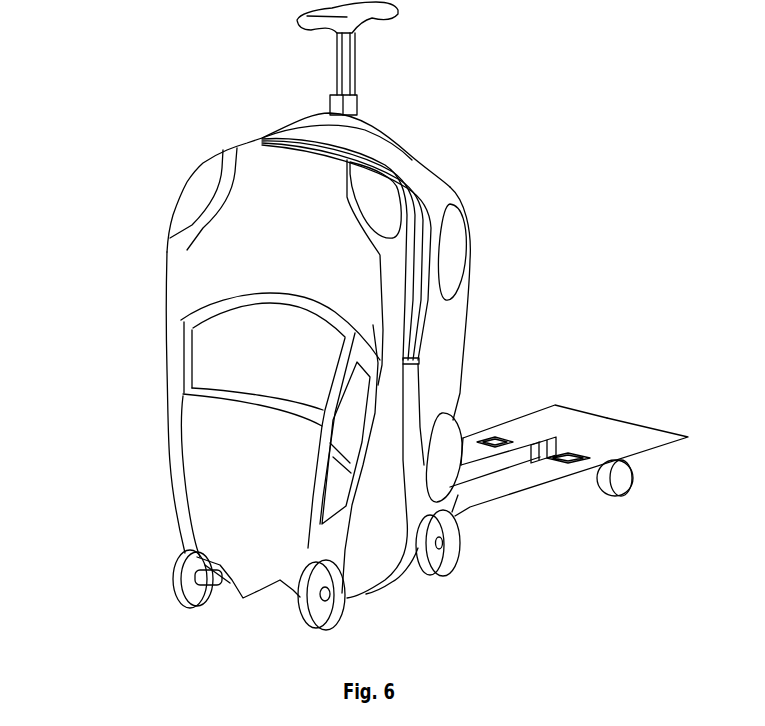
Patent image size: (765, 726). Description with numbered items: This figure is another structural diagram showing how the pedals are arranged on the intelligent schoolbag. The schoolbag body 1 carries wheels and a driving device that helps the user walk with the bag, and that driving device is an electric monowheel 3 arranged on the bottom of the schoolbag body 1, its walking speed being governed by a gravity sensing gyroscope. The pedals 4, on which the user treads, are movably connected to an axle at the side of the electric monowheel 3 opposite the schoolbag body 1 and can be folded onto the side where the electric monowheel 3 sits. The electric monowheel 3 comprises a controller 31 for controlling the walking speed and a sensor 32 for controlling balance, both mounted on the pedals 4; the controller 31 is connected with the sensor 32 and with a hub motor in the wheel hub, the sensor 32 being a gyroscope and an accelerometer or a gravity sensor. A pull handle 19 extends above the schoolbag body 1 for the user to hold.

The pull rod handle 19 is at (297, 22).
The schoolbag body 1 is at (442, 192).
The electric monowheel 3 is at (617, 477).
The pedals 4 is at (607, 441).
The controller 31 is at (558, 444).
The sensor 32 is at (577, 447).